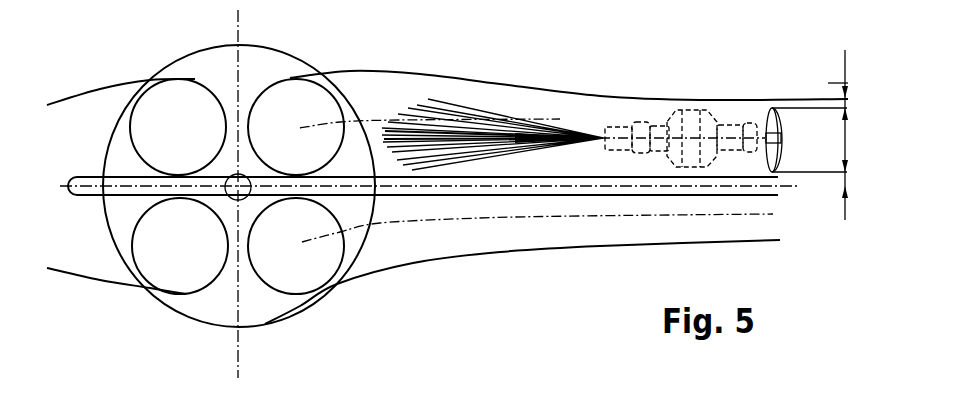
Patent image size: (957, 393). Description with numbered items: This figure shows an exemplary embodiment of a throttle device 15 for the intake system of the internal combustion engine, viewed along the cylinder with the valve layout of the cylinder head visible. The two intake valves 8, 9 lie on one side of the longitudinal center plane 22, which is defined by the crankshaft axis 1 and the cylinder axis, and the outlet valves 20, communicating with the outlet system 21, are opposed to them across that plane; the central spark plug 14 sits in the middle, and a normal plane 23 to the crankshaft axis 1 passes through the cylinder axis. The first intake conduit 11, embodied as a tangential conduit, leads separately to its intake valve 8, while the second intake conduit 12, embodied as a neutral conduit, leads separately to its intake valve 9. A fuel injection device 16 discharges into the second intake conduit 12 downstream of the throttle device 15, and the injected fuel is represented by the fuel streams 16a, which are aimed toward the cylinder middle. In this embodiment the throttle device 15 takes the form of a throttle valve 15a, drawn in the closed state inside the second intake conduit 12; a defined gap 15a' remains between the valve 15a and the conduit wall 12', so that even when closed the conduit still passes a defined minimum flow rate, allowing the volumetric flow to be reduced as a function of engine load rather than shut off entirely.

The crankshaft axis 1 is at (238, 33).
The intake valve 8 is at (297, 268).
The intake valve 9 is at (302, 95).
The first intake conduit 11 is at (411, 255).
The second intake conduit 12 is at (430, 106).
The conduit wall 12' is at (569, 97).
The central spark plug 14 is at (236, 183).
The throttle device 15 is at (778, 140).
The throttle valve 15a is at (809, 135).
The defined gap 15a' is at (824, 78).
The fuel injection device 16 is at (705, 113).
The fuel streams 16a is at (540, 123).
The outlet valves 20 is at (172, 112).
The outlet system 21 is at (62, 100).
The longitudinal center plane 22 is at (235, 340).
The normal plane 23 is at (92, 188).